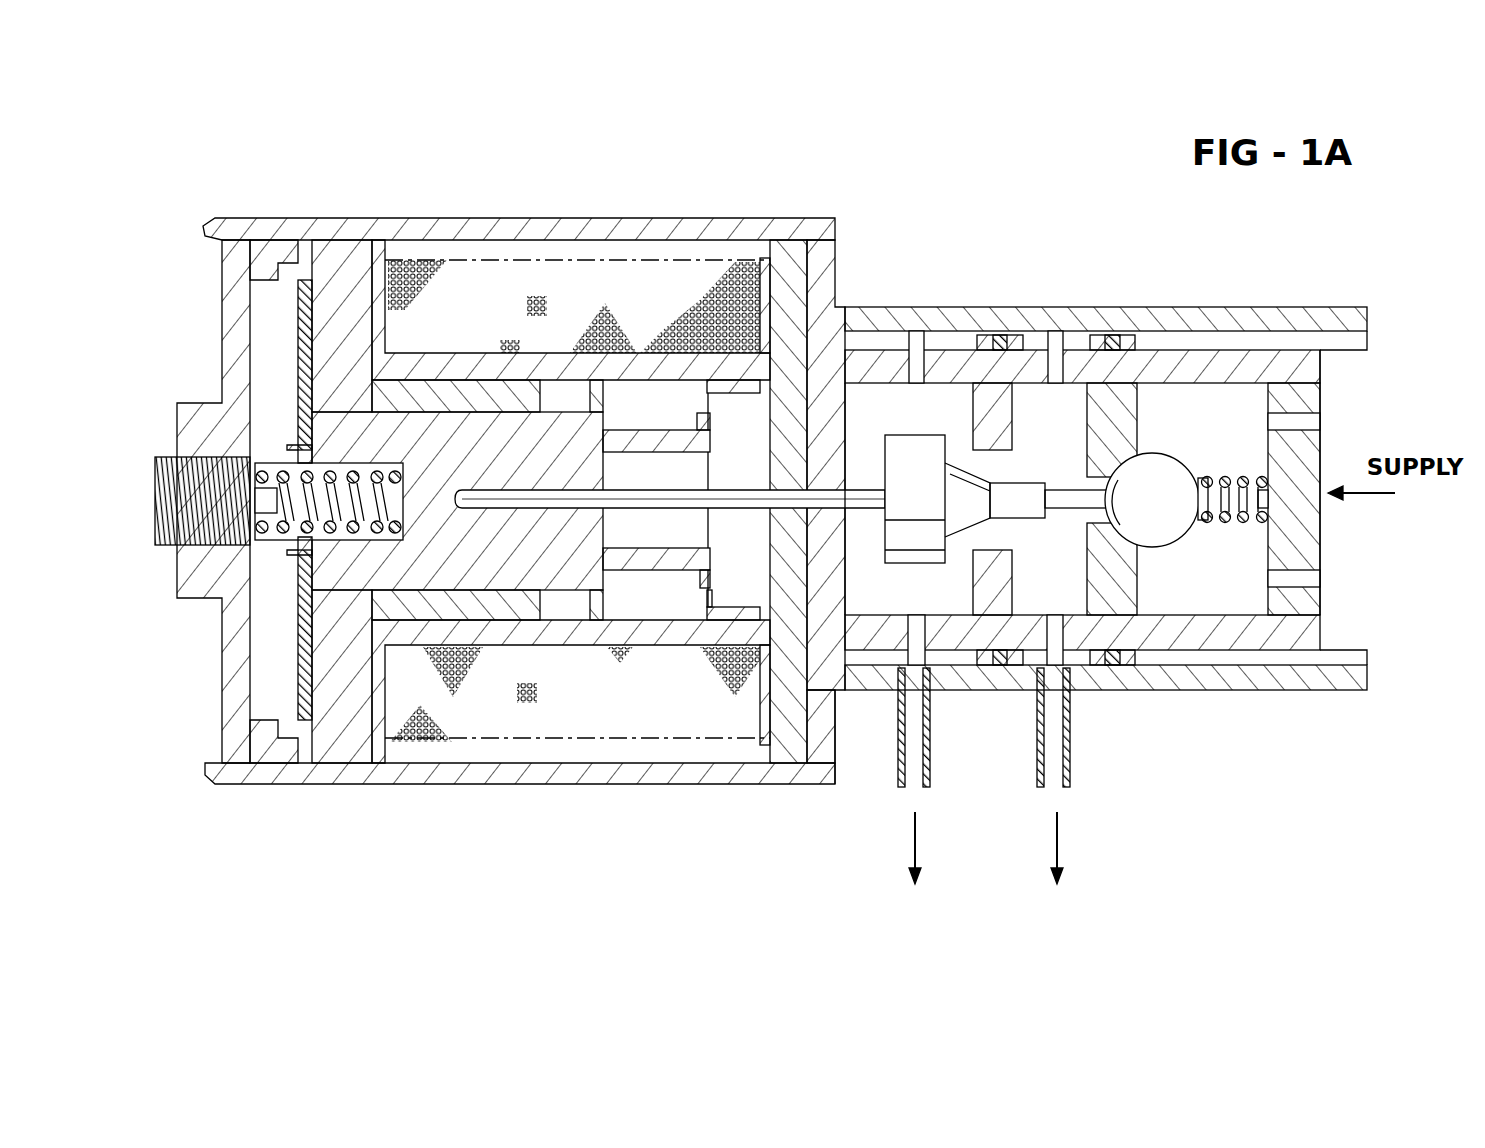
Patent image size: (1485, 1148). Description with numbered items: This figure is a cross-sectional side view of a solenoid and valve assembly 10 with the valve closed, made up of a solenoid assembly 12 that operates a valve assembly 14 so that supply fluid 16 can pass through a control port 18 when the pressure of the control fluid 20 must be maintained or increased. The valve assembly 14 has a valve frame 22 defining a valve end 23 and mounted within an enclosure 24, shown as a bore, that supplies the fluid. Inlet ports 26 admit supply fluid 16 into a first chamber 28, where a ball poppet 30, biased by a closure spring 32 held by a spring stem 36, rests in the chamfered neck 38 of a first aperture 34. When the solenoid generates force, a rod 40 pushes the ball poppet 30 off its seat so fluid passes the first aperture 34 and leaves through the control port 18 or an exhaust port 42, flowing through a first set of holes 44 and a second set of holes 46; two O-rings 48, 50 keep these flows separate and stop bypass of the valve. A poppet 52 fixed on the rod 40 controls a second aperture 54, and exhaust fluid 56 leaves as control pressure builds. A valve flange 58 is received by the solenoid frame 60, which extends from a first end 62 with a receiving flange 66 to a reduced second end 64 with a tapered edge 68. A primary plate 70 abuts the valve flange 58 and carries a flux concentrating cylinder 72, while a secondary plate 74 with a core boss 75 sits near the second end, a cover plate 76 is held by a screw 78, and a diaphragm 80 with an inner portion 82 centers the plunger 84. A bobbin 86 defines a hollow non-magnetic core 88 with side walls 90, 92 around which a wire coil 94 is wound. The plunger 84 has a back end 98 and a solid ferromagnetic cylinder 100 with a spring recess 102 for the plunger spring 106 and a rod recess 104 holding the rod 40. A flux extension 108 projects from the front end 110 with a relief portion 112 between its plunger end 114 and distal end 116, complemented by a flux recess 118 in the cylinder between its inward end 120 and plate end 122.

The solenoid and valve assembly 10 is at (773, 208).
The solenoid assembly 12 is at (381, 213).
The valve assembly 14 is at (1208, 345).
The supply fluid 16 is at (1388, 500).
The control port 18 is at (1070, 737).
The control fluid 20 is at (1062, 838).
The valve frame 22 is at (1322, 368).
The valve end 23 is at (1322, 468).
The enclosure 24 is at (1058, 345).
The inlet ports 26 is at (1322, 422).
The first chamber 28 is at (1267, 458).
The ball poppet 30 is at (1190, 545).
The closure spring 32 is at (1225, 478).
The first aperture 34 is at (1090, 483).
The spring stem 36 is at (1265, 514).
The chamfered neck 38 is at (1148, 552).
The rod 40 is at (687, 493).
The exhaust port 42 is at (930, 724).
The first set of holes 44 is at (1054, 360).
The second set of holes 46 is at (912, 370).
The O-ring 48 is at (1118, 668).
The O-ring 50 is at (1000, 668).
The poppet 52 is at (885, 436).
The second aperture 54 is at (1005, 455).
The exhaust fluid 56 is at (912, 826).
The valve flange 58 is at (836, 272).
The solenoid frame 60 is at (500, 788).
The first end 62 is at (822, 795).
The second end 64 is at (247, 788).
The receiving flange 66 is at (845, 742).
The tapered edge 68 is at (213, 762).
The primary plate 70 is at (833, 605).
The flux concentrating cylinder 72 is at (700, 392).
The secondary plate 74 is at (313, 240).
The core boss 75 is at (540, 613).
The cover plate 76 is at (222, 320).
The screw 78 is at (175, 457).
The diaphragm 80 is at (298, 322).
The inner portion 82 is at (298, 420).
The plunger 84 is at (593, 600).
The bobbin 86 is at (642, 655).
The core 88 is at (600, 390).
The side wall 90 is at (768, 252).
The side wall 92 is at (387, 247).
The wire coil 94 is at (538, 298).
The back end 98 is at (322, 593).
The solid cylinder 100 is at (318, 410).
The spring recess 102 is at (283, 543).
The rod recess 104 is at (578, 495).
The plunger spring 106 is at (255, 463).
The flux extension 108 is at (677, 540).
The front end 110 is at (610, 543).
The relief portion 112 is at (705, 422).
The plunger end 114 is at (607, 430).
The distal end 116 is at (712, 452).
The flux recess 118 is at (707, 598).
The inward end 120 is at (705, 607).
The plate end 122 is at (757, 588).